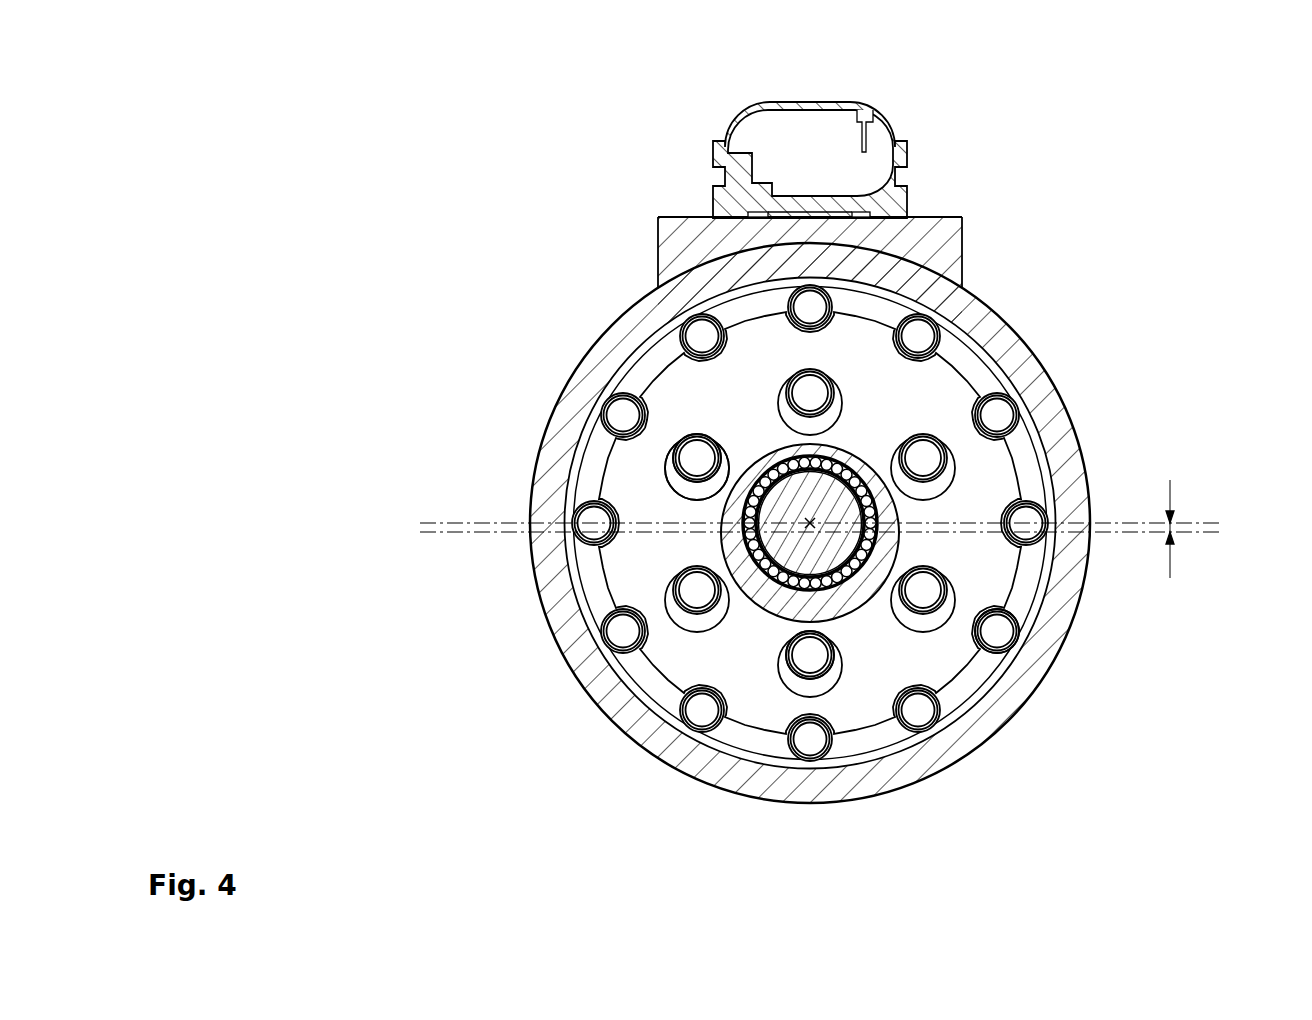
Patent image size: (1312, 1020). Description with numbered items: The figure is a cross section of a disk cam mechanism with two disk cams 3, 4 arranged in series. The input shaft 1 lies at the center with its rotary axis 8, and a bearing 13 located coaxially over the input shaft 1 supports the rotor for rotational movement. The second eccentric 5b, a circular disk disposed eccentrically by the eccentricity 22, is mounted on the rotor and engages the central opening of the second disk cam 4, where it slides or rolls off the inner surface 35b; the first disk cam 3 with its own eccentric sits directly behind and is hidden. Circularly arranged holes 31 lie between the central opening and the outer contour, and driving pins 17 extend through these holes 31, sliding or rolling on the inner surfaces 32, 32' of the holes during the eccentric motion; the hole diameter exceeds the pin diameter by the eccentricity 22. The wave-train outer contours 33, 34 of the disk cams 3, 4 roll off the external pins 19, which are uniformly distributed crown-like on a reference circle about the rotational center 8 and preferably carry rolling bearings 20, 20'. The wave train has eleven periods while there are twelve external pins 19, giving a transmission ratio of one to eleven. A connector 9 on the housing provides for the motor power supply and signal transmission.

The input shaft 1 is at (808, 505).
The first disk cam 3 is at (957, 395).
The second disk cam 4 is at (920, 395).
The second eccentric 5b is at (780, 600).
The rotary axis 8 is at (812, 523).
The connector 9 is at (818, 140).
The bearing 13 is at (748, 547).
The driving pin 17 is at (838, 665).
The external pin 19 is at (1005, 636).
The rolling bearing 20 is at (1077, 691).
The rolling bearing 20' is at (902, 757).
The eccentricity 22 is at (1172, 530).
The hole 31 is at (690, 623).
The inner surface of hole 32 is at (576, 403).
The inner surface of hole 32' is at (568, 435).
The outer contour 33 is at (605, 472).
The outer contour 34 is at (655, 670).
The inner surface 35b is at (805, 612).